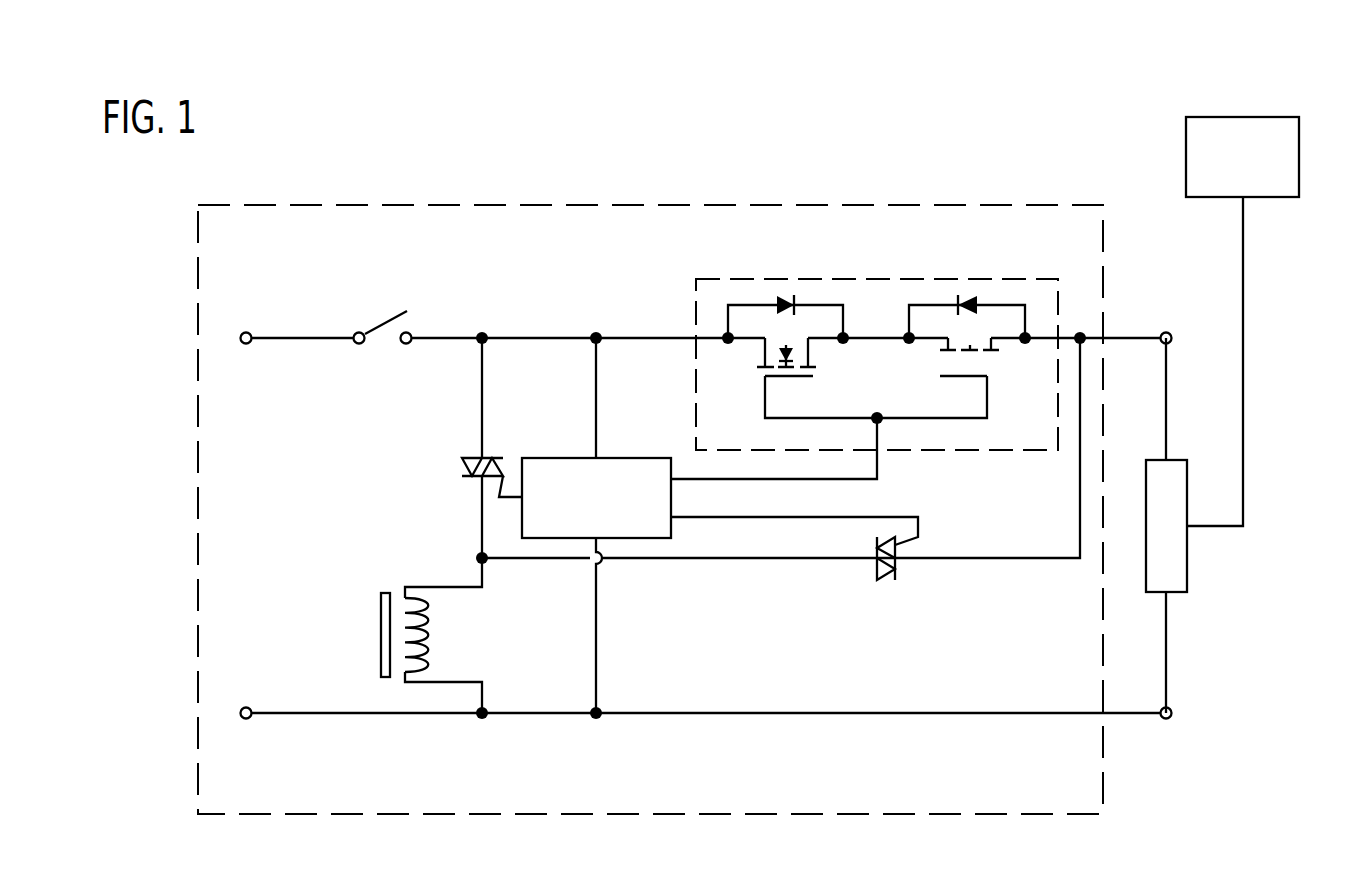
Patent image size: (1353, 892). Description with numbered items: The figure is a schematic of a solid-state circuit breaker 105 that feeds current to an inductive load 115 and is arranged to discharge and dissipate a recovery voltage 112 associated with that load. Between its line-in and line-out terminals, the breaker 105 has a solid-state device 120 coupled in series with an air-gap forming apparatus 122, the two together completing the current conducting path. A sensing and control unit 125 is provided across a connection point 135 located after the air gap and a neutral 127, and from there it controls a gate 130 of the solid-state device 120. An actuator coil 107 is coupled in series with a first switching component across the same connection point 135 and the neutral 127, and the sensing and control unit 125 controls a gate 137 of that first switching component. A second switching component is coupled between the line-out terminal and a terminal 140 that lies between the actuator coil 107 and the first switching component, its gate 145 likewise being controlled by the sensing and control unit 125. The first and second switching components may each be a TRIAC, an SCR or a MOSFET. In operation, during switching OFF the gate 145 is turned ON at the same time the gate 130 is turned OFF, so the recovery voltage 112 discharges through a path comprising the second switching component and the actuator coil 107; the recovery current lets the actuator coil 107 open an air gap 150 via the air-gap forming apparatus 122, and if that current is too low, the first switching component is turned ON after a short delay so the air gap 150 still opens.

The solid-state circuit breaker 105 is at (649, 205).
The actuator coil 107 is at (455, 634).
The recovery voltage 112 is at (1243, 117).
The inductive load 115 is at (1187, 553).
The solid-state device 120 is at (695, 296).
The air-gap forming apparatus 122 is at (377, 323).
The sensing and control unit 125 is at (627, 455).
The neutral 127 is at (313, 715).
The gate of the solid-state device 130 is at (877, 470).
The connection point 135 is at (484, 340).
The gate of the first switching component 137 is at (503, 480).
The terminal between the actuator coil and the first switching component 140 is at (480, 556).
The gate of the second switching component 145 is at (910, 546).
The air gap 150 is at (421, 326).